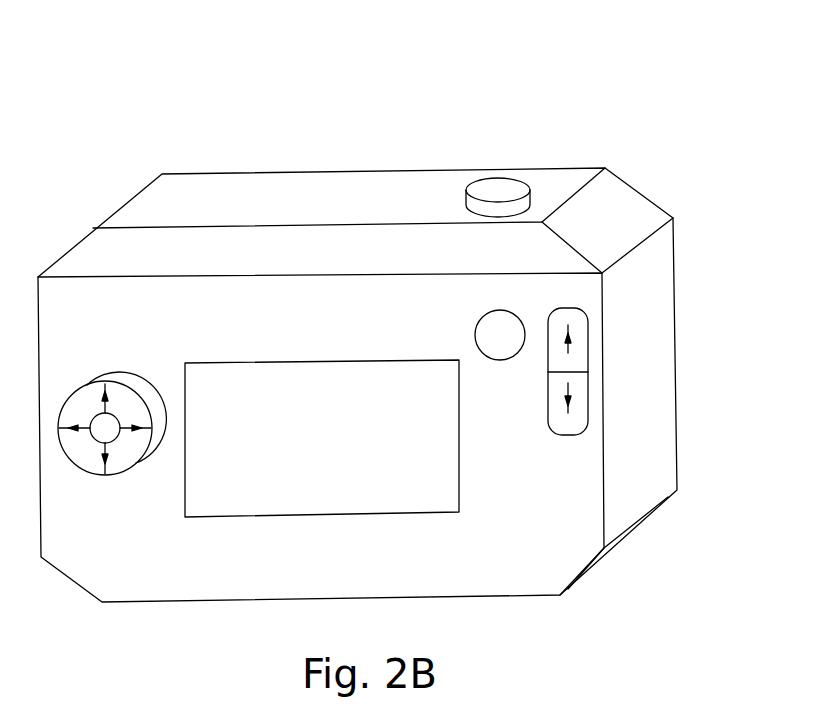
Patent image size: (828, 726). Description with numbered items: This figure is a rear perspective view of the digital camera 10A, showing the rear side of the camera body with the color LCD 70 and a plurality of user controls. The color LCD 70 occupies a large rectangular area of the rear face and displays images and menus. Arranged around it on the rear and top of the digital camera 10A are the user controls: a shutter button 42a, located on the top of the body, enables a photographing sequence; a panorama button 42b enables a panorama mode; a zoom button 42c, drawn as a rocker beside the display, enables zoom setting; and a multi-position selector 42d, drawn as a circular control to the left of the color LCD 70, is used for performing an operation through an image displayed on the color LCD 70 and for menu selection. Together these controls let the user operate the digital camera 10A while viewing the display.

The digital camera 10A is at (575, 99).
The shutter button 42a is at (517, 190).
The panorama button 42b is at (490, 362).
The zoom button 42c is at (580, 367).
The multi-position selector 42d is at (115, 473).
The color LCD 70 is at (228, 519).